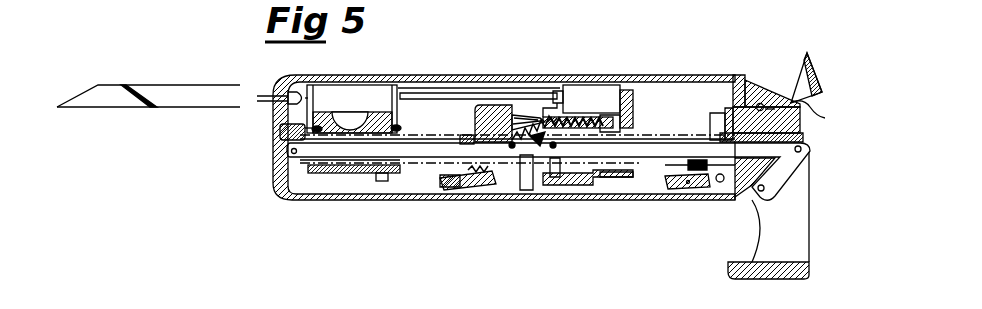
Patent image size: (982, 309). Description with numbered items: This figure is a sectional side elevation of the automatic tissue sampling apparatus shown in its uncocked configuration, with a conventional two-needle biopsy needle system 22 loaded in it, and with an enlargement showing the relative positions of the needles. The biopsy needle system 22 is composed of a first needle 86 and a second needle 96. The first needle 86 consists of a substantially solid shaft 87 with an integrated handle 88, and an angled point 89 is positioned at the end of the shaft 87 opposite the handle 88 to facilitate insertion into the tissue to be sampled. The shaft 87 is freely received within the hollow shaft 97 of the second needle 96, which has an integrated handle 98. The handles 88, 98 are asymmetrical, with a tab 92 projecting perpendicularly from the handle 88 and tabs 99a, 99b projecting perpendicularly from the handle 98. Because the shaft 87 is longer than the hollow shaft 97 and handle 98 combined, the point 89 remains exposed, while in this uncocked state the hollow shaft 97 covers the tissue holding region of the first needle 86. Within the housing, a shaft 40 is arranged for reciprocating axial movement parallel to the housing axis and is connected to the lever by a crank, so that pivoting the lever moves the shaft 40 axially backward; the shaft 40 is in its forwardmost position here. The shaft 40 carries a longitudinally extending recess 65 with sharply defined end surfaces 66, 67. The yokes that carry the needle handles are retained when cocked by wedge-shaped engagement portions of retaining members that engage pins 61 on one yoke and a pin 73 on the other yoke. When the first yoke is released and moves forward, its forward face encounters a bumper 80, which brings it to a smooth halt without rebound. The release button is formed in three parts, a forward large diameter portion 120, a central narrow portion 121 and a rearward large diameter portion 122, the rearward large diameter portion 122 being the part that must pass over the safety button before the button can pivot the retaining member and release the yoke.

The biopsy needle system 22 is at (193, 122).
The shaft 40 is at (650, 152).
The pins 61 is at (612, 185).
The longitudinally extending recess 65 is at (528, 148).
The end surface 66 is at (554, 150).
The end surface 67 is at (513, 146).
The pin 73 is at (383, 181).
The bumper 80 is at (532, 110).
The first needle 86 is at (440, 90).
The shaft 87 is at (479, 95).
The handle 88 is at (588, 93).
The angled point 89 is at (66, 103).
The tab 92 is at (622, 117).
The second needle 96 is at (263, 97).
The hollow shaft 97 is at (187, 85).
The handle 98 is at (357, 93).
The tab 99a is at (400, 110).
The tab 99b is at (313, 113).
The forward large diameter portion 120 is at (745, 100).
The central narrow portion 121 is at (767, 106).
The rearward large diameter portion 122 is at (818, 115).